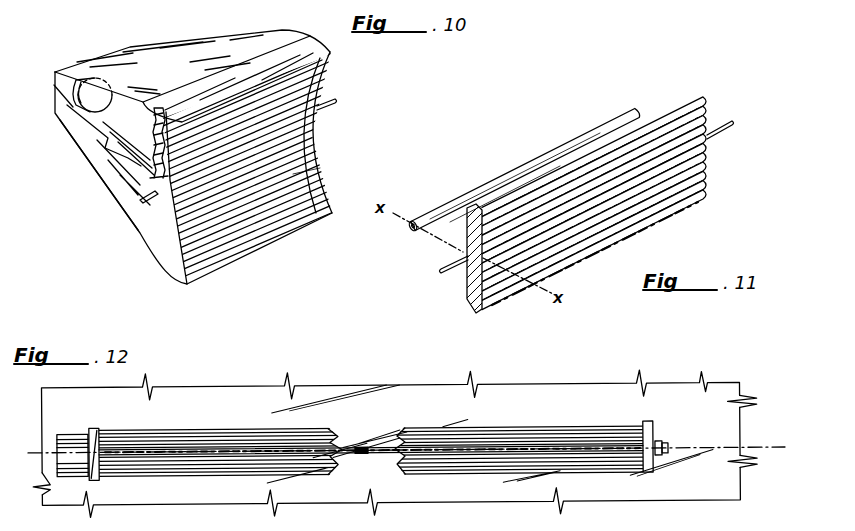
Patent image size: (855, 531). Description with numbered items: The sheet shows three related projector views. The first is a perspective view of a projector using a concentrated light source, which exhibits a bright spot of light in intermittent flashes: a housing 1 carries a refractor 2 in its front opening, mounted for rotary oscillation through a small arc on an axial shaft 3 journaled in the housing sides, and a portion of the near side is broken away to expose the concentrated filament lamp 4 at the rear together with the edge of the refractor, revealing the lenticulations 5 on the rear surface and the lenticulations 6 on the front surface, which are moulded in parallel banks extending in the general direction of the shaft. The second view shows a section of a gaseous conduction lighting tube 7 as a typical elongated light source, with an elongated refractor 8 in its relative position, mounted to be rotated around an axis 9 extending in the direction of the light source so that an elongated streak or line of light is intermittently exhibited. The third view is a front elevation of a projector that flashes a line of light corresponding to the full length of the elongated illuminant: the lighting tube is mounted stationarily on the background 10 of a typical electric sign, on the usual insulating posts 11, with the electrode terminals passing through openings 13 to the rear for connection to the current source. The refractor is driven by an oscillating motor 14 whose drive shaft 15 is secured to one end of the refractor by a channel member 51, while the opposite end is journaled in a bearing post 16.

In FIG. 10, the housing 1 is at (123, 207).
In FIG. 10, the refractor 2 is at (253, 217).
In FIG. 10, the axial shaft 3 is at (332, 103).
In FIG. 10, the concentrated filament lamp 4 is at (93, 97).
In FIG. 10, the lenticulations on rear surface 5 is at (135, 168).
In FIG. 11, the lenticulations on rear surface 5 is at (466, 278).
In FIG. 10, the lenticulations on front surface 6 is at (292, 186).
In FIG. 11, the lenticulations on front surface 6 is at (626, 218).
In FIG. 11, the gaseous conduction lighting tube 7 is at (430, 213).
In FIG. 12, the gaseous conduction lighting tube 7 is at (387, 447).
In FIG. 11, the refractor 8 is at (658, 208).
In FIG. 12, the refractor 8 is at (535, 437).
In FIG. 11, the axis 9 is at (713, 133).
In FIG. 12, the background 10 is at (213, 398).
In FIG. 12, the insulating posts 11 is at (362, 454).
In FIG. 12, the openings 13 is at (786, 442).
In FIG. 12, the oscillating motor 14 is at (68, 430).
In FIG. 12, the drive shaft 15 is at (97, 430).
In FIG. 12, the bearing post 16 is at (663, 442).
In FIG. 12, the channel member 51 is at (98, 474).